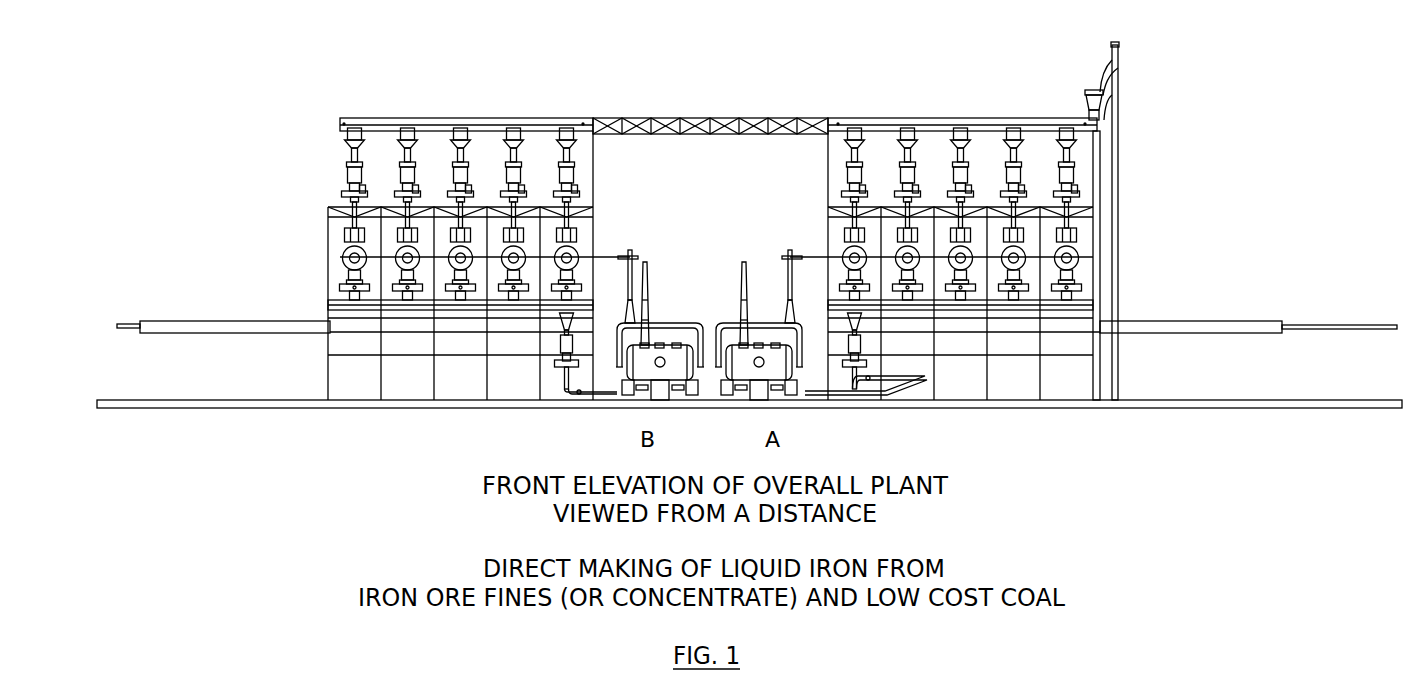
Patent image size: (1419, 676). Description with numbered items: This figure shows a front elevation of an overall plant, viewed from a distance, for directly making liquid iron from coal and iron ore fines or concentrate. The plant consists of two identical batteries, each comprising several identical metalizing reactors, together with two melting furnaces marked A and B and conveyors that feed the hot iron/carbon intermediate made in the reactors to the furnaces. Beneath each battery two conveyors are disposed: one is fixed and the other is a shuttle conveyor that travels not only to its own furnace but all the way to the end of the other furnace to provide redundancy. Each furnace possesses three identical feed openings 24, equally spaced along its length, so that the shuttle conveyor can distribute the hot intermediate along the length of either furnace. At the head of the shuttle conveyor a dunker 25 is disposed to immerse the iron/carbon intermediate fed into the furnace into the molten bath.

The feed opening 24 is at (662, 343).
The dunker 25 is at (647, 262).